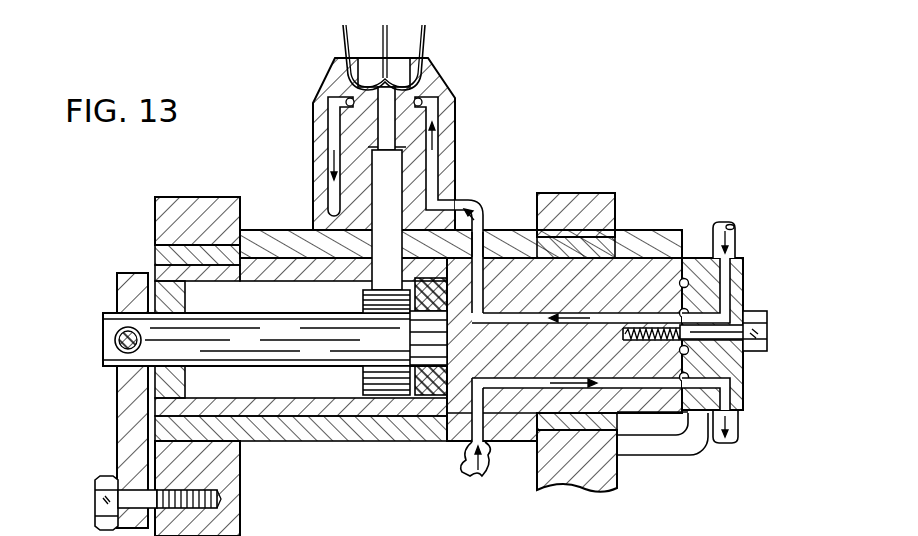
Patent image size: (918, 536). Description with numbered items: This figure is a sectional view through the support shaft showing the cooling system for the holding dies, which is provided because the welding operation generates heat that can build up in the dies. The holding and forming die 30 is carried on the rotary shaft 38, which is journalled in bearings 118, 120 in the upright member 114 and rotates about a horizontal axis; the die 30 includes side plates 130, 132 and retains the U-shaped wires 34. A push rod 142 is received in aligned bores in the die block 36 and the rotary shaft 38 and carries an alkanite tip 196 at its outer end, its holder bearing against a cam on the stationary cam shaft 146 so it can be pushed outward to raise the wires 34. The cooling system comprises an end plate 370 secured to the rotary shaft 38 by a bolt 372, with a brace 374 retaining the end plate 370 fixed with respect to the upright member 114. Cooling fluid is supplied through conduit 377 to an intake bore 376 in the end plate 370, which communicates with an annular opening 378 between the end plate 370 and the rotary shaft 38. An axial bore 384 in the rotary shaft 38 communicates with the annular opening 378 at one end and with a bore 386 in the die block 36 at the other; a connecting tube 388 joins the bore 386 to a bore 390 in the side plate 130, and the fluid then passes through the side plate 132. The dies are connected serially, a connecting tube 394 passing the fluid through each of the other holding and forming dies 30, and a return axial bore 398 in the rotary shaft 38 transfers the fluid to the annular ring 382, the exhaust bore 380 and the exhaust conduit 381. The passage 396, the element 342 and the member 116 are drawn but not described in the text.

The U-shaped wires 34 is at (426, 44).
The holding and forming die 30 is at (473, 84).
The bore in side plate 390 is at (433, 118).
The side plate 130 is at (447, 125).
The push rod 142 is at (385, 200).
The connecting tube 388 is at (461, 199).
The bore in die block 386 is at (492, 320).
The axial bore 384 is at (493, 232).
The upright member 114 is at (575, 217).
The bearing 120 is at (603, 248).
The annular ring 382 is at (687, 296).
The conduit 377 is at (737, 239).
The intake bore 376 is at (744, 258).
The end plate 370 is at (744, 290).
The bolt 372 is at (759, 314).
The annular opening 378 is at (700, 354).
The exhaust bore 380 is at (744, 394).
The conduit 381 is at (735, 427).
The brace 374 is at (660, 444).
The die block 36 is at (297, 443).
The rotary shaft 38 is at (335, 410).
The passage 396 is at (477, 428).
The connecting tube 394 is at (480, 471).
The axial bore 398 is at (543, 387).
The alkanite tip 196 is at (543, 474).
The passage 342 is at (316, 110).
The side plate 132 is at (322, 162).
The bracket 116 is at (197, 213).
The bearing 118 is at (214, 247).
The stationary cam shaft 146 is at (273, 331).